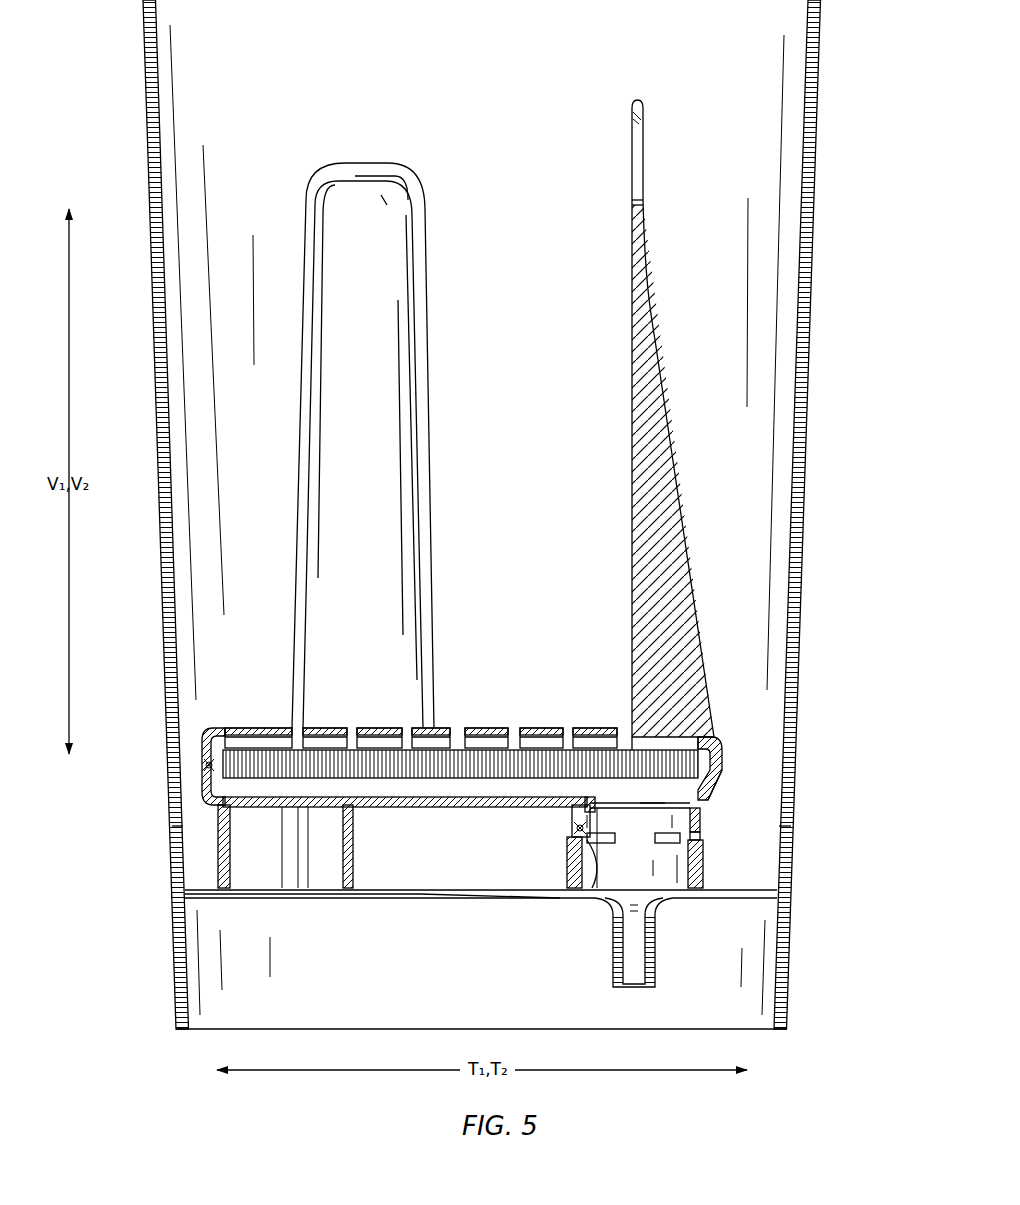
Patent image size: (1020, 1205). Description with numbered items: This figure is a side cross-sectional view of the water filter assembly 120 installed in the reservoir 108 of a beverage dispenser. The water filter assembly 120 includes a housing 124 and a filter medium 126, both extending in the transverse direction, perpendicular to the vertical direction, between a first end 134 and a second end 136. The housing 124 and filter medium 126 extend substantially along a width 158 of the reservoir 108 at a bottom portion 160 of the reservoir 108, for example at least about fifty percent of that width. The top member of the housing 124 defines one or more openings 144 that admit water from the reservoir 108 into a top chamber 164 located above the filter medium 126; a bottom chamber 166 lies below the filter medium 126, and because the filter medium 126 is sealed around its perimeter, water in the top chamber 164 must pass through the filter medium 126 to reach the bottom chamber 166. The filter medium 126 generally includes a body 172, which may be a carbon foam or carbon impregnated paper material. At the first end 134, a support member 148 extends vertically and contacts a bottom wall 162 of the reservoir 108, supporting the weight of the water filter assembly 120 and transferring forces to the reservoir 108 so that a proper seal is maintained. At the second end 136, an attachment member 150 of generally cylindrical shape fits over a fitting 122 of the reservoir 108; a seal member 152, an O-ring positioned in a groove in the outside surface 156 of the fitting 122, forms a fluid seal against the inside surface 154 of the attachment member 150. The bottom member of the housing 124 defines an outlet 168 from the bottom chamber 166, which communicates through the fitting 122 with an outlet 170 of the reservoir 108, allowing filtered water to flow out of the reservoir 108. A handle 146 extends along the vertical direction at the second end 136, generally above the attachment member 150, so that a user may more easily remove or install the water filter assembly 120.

The reservoir 108 is at (789, 306).
The water filter assembly 120 is at (500, 533).
The fitting 122 is at (704, 858).
The housing 124 is at (716, 710).
The filter medium 126 is at (438, 731).
The first end 134 is at (219, 712).
The second end 136 is at (745, 791).
The openings 144 is at (460, 728).
The handle 146 is at (668, 480).
The support member 148 is at (354, 857).
The attachment member 150 is at (716, 772).
The seal member 152 is at (701, 818).
The inside surface 154 is at (600, 894).
The outside surface 156 is at (571, 829).
The width 158 is at (860, 826).
The bottom portion 160 is at (188, 778).
The bottom wall 162 is at (418, 898).
The top chamber 164 is at (421, 699).
The bottom chamber 166 is at (430, 797).
The outlet 168 is at (653, 798).
The outlet 170 is at (633, 912).
The body 172 is at (540, 770).